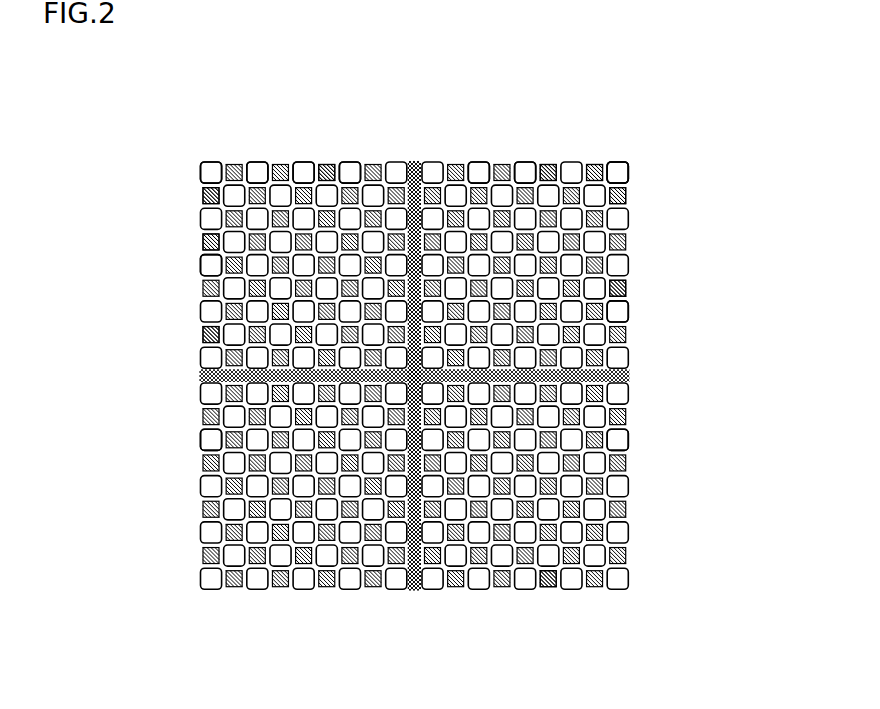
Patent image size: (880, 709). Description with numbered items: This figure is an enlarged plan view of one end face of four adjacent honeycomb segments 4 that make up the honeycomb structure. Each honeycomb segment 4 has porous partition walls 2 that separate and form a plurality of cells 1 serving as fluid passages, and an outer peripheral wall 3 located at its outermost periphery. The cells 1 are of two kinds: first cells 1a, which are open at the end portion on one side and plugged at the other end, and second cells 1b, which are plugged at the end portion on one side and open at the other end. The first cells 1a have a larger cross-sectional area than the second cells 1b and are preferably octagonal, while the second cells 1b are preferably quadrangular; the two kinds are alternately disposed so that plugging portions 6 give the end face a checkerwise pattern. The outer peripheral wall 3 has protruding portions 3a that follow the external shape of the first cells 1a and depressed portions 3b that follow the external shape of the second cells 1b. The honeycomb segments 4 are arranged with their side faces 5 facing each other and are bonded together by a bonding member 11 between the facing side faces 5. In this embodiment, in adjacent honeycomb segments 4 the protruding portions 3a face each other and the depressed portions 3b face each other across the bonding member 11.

The cell 1 is at (263, 178).
The first cell 1a is at (353, 173).
The second cell 1b is at (628, 200).
The partition wall 2 is at (212, 168).
The outer peripheral wall 3 is at (307, 163).
The protruding portion 3a is at (198, 265).
The depressed portion 3b is at (198, 245).
The honeycomb segment 4 is at (622, 162).
The side face 5 is at (518, 163).
The plugging portion 6 is at (550, 163).
The bonding member 11 is at (418, 165).